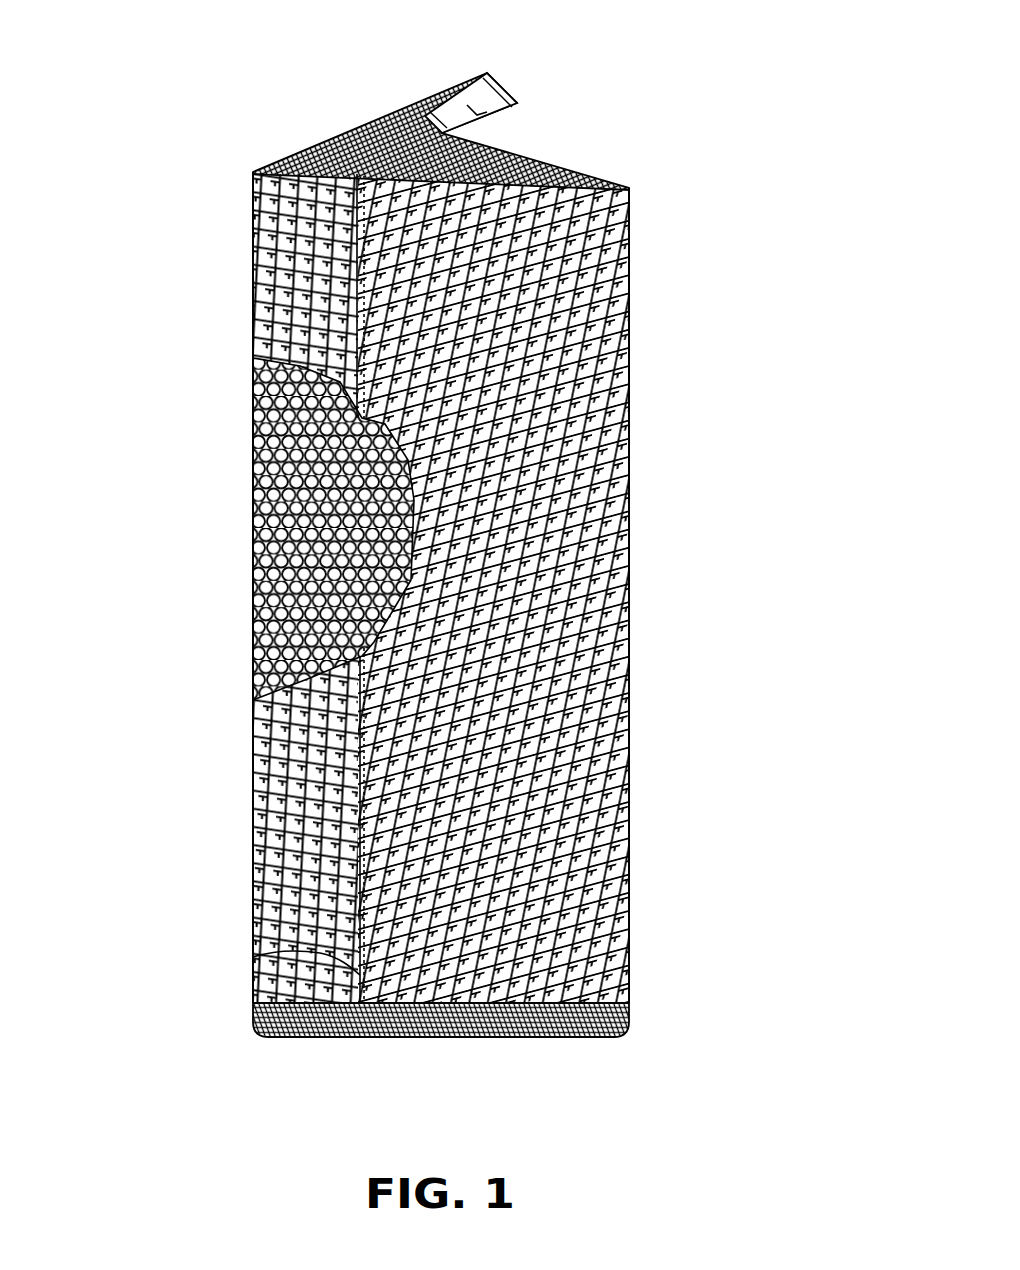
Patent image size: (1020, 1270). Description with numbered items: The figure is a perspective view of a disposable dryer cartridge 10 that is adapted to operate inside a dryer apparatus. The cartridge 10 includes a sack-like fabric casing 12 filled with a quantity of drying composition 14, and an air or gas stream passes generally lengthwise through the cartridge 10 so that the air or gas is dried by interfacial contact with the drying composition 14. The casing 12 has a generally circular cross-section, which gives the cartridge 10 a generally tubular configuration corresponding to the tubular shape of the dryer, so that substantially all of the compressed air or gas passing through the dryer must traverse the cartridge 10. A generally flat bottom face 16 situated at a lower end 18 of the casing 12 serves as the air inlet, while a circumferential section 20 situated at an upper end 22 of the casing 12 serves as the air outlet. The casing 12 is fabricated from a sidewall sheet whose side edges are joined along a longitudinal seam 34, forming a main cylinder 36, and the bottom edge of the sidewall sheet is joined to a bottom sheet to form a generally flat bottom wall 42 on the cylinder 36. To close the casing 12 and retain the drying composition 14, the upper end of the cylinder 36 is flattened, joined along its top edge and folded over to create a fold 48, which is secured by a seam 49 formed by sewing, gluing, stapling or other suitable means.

The disposable dryer cartridge 10 is at (92, 110).
The sack-like fabric casing 12 is at (628, 522).
The drying composition 14 is at (290, 530).
The bottom face 16 is at (612, 1073).
The lower end 18 is at (629, 1028).
The circumferential section 20 is at (630, 228).
The upper end 22 is at (253, 176).
The longitudinal seam 34 is at (253, 957).
The main cylinder 36 is at (575, 665).
The bottom wall 42 is at (563, 1033).
The fold 48 is at (503, 90).
The seam 49 is at (487, 113).